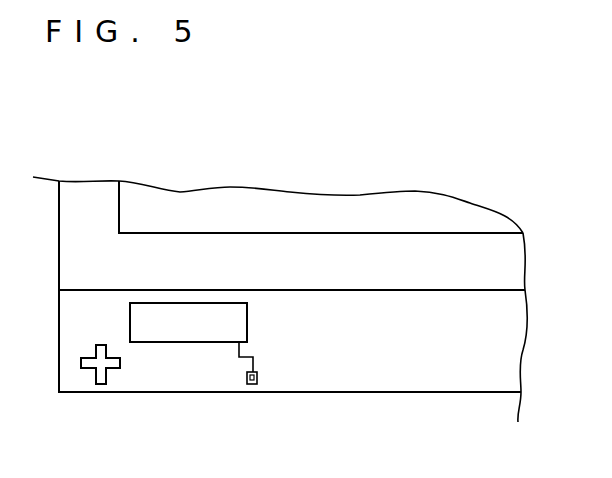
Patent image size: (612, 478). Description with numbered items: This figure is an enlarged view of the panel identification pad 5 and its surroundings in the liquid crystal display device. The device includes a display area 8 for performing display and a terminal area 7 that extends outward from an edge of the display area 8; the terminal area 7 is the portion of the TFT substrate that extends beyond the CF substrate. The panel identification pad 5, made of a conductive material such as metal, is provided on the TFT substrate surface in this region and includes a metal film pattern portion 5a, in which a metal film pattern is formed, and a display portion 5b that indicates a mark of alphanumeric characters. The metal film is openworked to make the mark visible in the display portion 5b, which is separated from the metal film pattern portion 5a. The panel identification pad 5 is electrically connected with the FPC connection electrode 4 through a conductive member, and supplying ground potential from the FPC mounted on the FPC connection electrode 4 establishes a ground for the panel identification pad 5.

The FPC connection electrode 4 is at (253, 384).
The panel identification pad 5 is at (192, 342).
The metal film pattern portion 5a is at (227, 328).
The display portion 5b is at (160, 332).
The terminal area 7 is at (399, 377).
The display area 8 is at (178, 200).